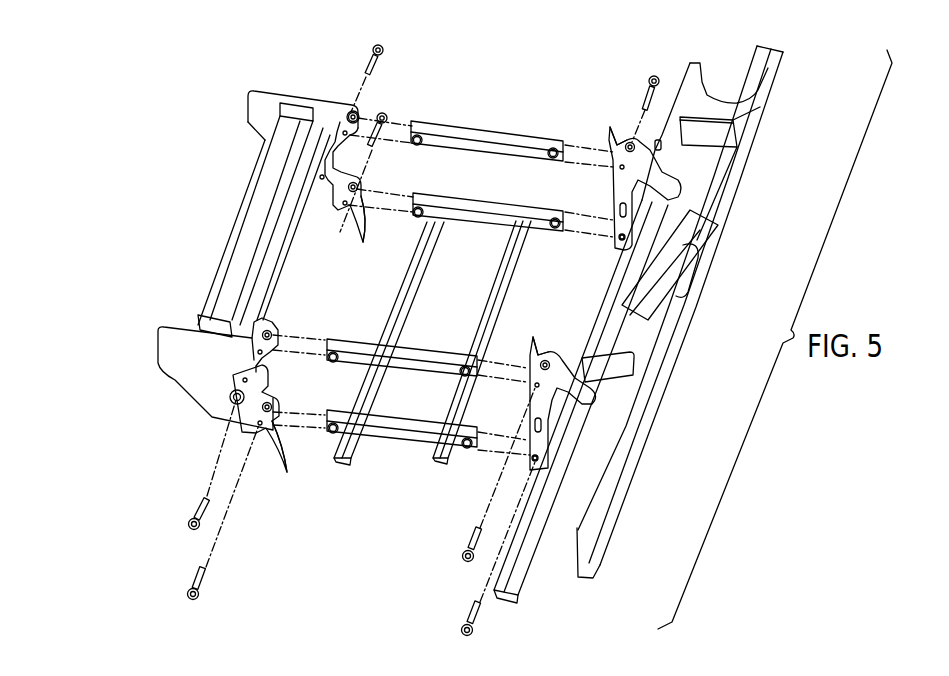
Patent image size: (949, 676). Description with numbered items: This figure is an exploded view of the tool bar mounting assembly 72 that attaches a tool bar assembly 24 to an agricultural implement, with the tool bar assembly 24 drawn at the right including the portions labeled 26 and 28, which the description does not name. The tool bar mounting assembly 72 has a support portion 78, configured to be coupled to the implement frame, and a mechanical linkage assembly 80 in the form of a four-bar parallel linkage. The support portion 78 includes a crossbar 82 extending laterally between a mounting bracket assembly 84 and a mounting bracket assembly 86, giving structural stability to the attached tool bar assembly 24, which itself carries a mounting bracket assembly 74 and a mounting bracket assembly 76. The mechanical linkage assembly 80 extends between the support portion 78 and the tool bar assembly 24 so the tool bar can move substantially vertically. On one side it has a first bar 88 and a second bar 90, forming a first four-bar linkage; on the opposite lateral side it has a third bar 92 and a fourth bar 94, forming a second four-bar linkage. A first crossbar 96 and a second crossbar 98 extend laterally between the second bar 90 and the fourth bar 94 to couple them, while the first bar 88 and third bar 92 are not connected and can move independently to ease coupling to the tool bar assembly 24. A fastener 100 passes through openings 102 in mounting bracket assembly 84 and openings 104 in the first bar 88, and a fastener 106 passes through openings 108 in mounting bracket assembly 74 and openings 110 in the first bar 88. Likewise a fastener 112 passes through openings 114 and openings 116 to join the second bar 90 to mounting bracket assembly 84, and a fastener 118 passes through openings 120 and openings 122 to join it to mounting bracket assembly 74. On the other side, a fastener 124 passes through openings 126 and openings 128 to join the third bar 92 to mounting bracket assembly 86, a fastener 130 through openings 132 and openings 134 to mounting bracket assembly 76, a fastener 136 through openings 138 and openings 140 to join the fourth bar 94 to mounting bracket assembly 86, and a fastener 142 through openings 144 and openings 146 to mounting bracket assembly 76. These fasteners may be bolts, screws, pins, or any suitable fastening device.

The tool bar assembly 24 is at (757, 282).
The rail 26 is at (687, 300).
The rail 28 is at (650, 413).
The tool bar mounting assembly 72 is at (152, 570).
The mounting bracket assembly 74 is at (529, 386).
The mounting bracket assembly 76 is at (623, 193).
The support portion 78 is at (170, 190).
The mechanical linkage assembly 80 is at (505, 97).
The crossbar 82 is at (248, 218).
The mounting bracket assembly 84 is at (190, 377).
The mounting bracket assembly 86 is at (344, 131).
The first bar 88 is at (360, 343).
The second bar 90 is at (400, 437).
The third bar 92 is at (500, 140).
The fourth bar 94 is at (487, 203).
The first crossbar 96 is at (407, 287).
The second crossbar 98 is at (493, 305).
The fastener 100 is at (191, 521).
The openings 102 is at (262, 333).
The openings 104 is at (333, 360).
The fastener 106 is at (472, 540).
The openings 108 is at (543, 360).
The openings 110 is at (457, 372).
The fastener 112 is at (203, 580).
The openings 114 is at (285, 466).
The openings 116 is at (341, 433).
The fastener 118 is at (473, 610).
The openings 120 is at (533, 458).
The openings 122 is at (460, 444).
The fastener 124 is at (383, 52).
The openings 126 is at (353, 111).
The openings 128 is at (422, 138).
The fastener 130 is at (646, 95).
The openings 132 is at (616, 137).
The openings 134 is at (556, 146).
The fastener 136 is at (386, 116).
The openings 138 is at (355, 192).
The openings 140 is at (420, 212).
The fastener 142 is at (658, 140).
The openings 144 is at (620, 239).
The openings 146 is at (554, 218).